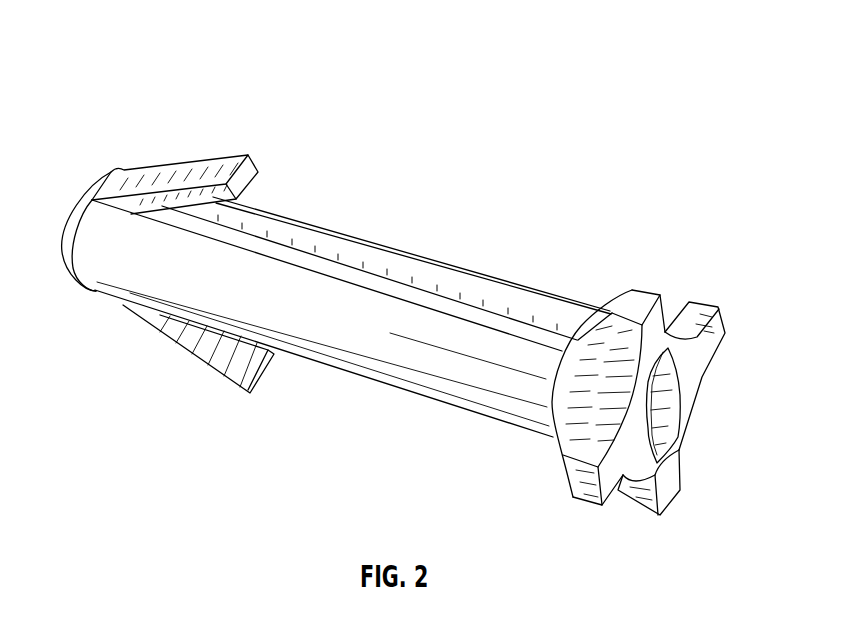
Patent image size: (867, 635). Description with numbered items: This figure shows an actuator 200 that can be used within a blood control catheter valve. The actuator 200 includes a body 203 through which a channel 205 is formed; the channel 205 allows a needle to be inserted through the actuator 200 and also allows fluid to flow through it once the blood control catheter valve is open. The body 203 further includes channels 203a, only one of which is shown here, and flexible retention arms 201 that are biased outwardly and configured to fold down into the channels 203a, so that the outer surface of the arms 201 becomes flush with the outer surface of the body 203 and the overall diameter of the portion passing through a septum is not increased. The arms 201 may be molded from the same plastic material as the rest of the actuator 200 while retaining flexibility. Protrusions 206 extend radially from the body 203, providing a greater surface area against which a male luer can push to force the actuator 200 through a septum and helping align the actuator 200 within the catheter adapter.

The actuator 200 is at (123, 40).
The flexible retention arms 201 is at (202, 165).
The body 203 is at (381, 369).
The channels 203a is at (418, 298).
The channel 205 is at (668, 425).
The protrusions 206 is at (650, 294).